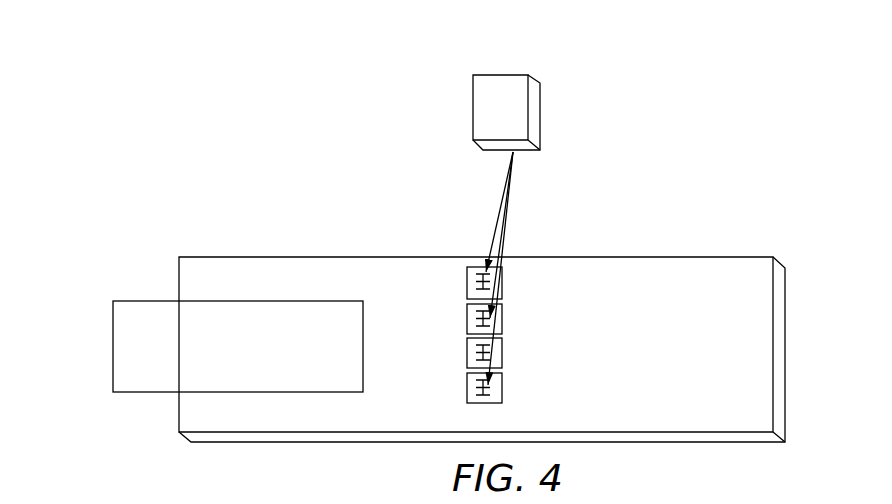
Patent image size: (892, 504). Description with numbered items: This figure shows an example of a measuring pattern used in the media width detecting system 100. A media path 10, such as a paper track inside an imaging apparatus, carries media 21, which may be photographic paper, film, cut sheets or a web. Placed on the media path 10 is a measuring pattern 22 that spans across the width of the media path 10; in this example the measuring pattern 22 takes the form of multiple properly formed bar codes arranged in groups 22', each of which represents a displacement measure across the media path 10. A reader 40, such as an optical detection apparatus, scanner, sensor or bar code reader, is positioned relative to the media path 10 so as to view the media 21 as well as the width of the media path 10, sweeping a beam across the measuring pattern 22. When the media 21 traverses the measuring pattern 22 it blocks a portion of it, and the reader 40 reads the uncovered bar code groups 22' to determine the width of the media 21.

The media path 10 is at (626, 256).
The media 21 is at (113, 345).
The measuring pattern 22 is at (533, 335).
The bar code group 22' is at (444, 306).
The reader 40 is at (505, 75).
The media width detecting system 100 is at (395, 176).